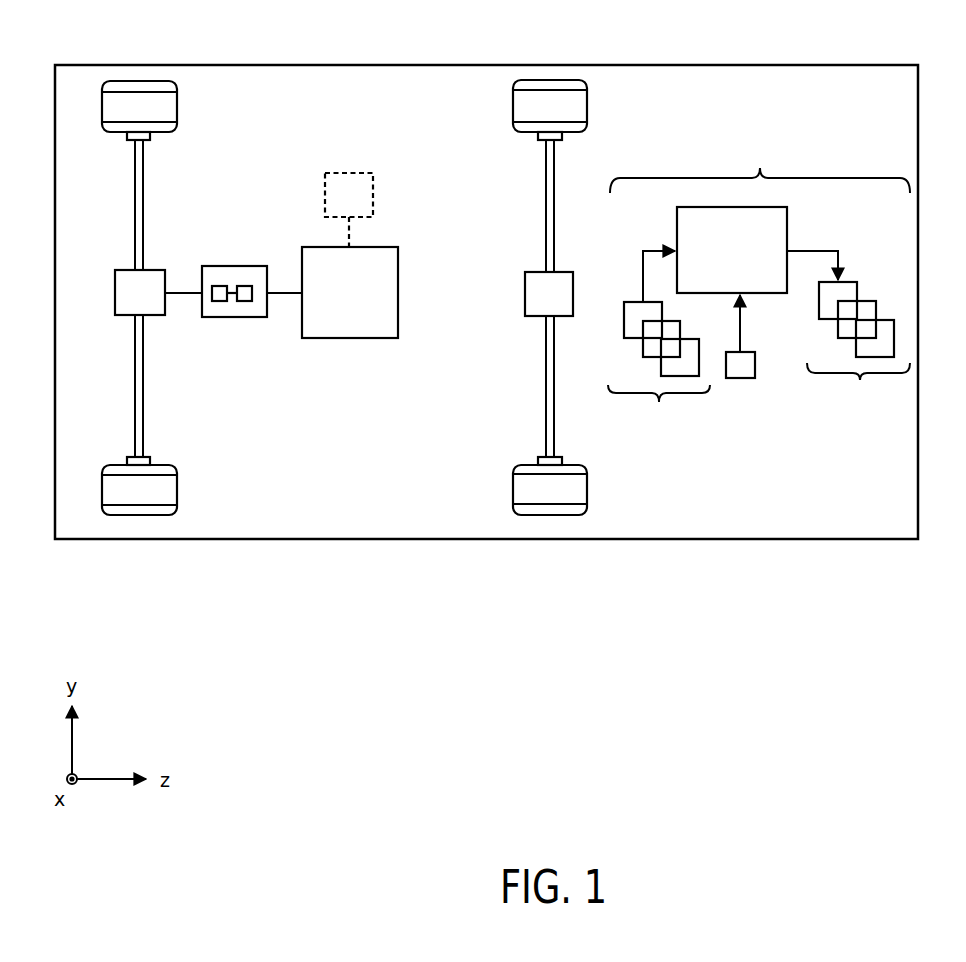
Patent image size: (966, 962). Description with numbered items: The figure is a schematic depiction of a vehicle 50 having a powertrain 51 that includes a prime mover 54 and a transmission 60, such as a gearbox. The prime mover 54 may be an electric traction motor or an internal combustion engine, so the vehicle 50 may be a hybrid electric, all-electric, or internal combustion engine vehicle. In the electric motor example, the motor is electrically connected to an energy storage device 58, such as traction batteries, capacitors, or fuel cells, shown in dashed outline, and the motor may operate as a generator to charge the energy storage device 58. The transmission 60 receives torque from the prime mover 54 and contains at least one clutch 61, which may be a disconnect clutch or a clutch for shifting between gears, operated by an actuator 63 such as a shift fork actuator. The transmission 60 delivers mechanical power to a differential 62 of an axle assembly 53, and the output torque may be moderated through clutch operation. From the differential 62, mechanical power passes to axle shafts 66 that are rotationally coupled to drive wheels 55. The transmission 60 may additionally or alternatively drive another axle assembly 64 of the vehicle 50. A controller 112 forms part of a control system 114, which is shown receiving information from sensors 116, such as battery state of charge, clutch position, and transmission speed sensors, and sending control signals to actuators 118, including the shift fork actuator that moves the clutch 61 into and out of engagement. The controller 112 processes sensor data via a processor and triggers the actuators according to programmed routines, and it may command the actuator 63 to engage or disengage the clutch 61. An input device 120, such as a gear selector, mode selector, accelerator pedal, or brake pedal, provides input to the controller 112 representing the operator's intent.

The vehicle 50 is at (681, 46).
The powertrain 51 is at (421, 206).
The axle assembly 53 is at (174, 252).
The prime mover 54 is at (375, 338).
The drive wheels 55 is at (178, 488).
The energy storage device 58 is at (373, 210).
The transmission 60 is at (245, 309).
The clutch 61 is at (219, 286).
The differential 62 is at (115, 303).
The actuator 63 is at (244, 286).
The another axle assembly 64 is at (491, 249).
The axle shafts 66 is at (145, 380).
The controller 112 is at (732, 250).
The control system 114 is at (759, 287).
The sensors 116 is at (659, 367).
The actuators 118 is at (858, 346).
The input device 120 is at (744, 378).